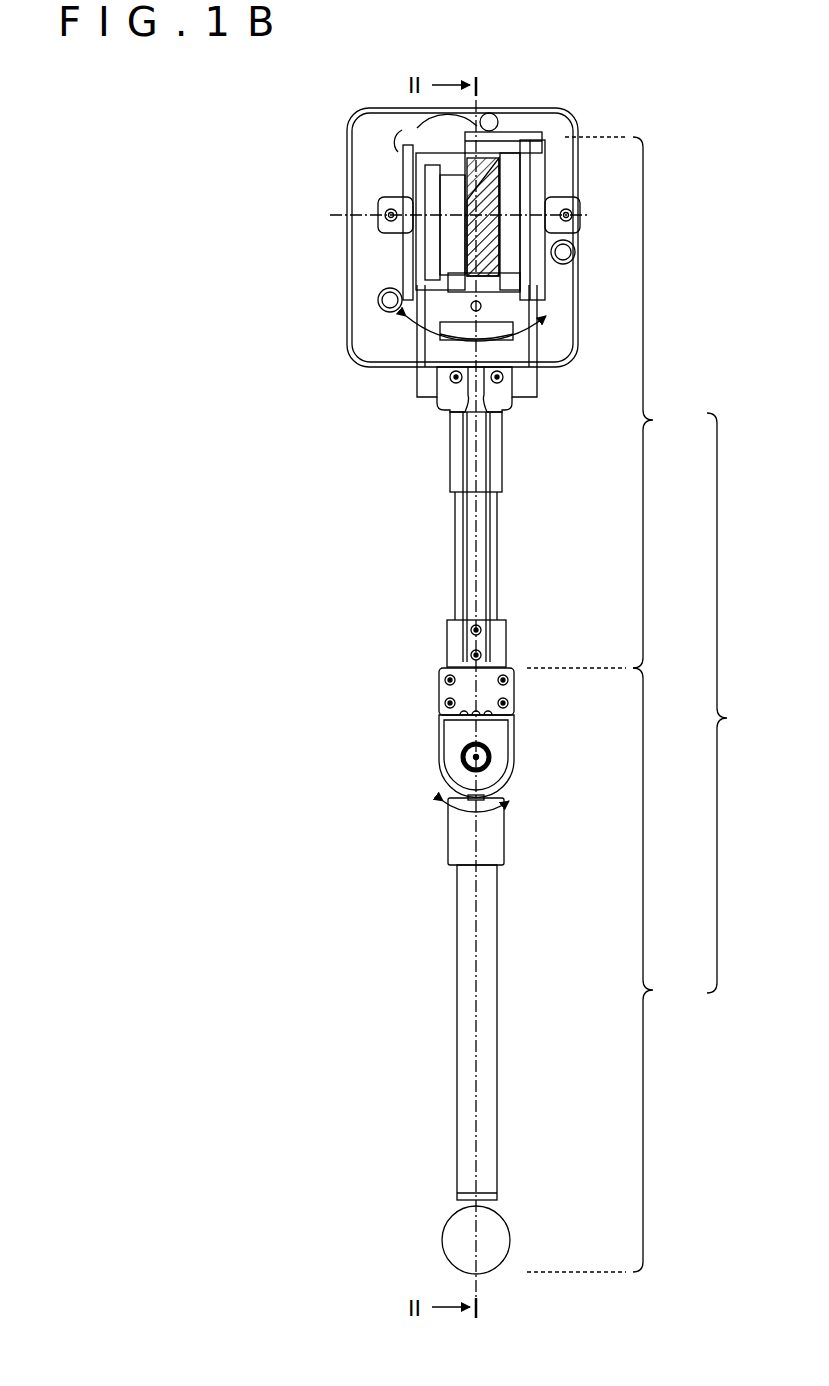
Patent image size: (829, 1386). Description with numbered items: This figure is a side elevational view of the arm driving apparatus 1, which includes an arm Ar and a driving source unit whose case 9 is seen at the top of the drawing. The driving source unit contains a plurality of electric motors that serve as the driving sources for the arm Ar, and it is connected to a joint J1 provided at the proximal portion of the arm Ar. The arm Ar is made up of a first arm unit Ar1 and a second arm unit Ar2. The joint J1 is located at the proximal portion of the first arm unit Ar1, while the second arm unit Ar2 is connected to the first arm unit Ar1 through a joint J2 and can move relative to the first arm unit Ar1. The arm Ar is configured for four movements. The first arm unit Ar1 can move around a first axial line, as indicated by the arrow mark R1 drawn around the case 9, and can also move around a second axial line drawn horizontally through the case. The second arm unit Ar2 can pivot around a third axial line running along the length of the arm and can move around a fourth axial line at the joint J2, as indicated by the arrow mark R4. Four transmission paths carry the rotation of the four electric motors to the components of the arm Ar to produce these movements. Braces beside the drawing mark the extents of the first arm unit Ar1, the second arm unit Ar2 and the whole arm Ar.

The arm driving apparatus 1 is at (622, 96).
The case 9 is at (362, 134).
The joint J1 is at (517, 128).
The joint J2 is at (436, 748).
The arrow mark R1 is at (548, 328).
The arrow mark R4 is at (510, 810).
The arm Ar is at (731, 703).
The first arm unit Ar1 is at (610, 402).
The second arm unit Ar2 is at (610, 970).